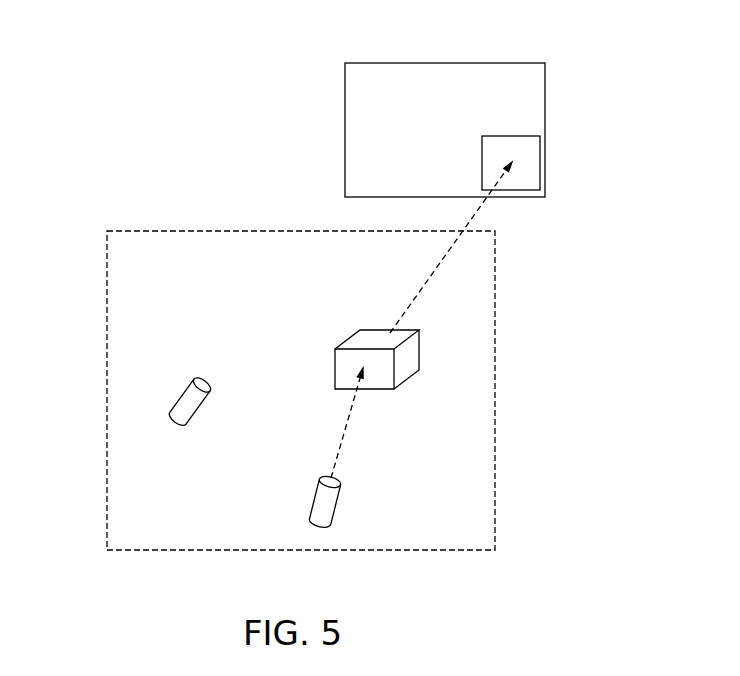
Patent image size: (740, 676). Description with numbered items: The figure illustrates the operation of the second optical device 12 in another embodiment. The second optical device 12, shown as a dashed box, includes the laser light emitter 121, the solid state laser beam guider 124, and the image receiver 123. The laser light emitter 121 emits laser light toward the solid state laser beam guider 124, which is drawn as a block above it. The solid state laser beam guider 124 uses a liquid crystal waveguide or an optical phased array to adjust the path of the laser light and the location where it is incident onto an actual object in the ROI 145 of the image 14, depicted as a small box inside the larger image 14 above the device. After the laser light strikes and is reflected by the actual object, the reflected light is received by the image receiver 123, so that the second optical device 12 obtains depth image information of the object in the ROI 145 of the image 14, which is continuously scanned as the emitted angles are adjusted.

The image 14 is at (385, 63).
The ROI 145 is at (512, 136).
The second optical device 12 is at (495, 312).
The solid state laser beam guider 124 is at (400, 362).
The image receiver 123 is at (183, 399).
The laser light emitter 121 is at (323, 510).